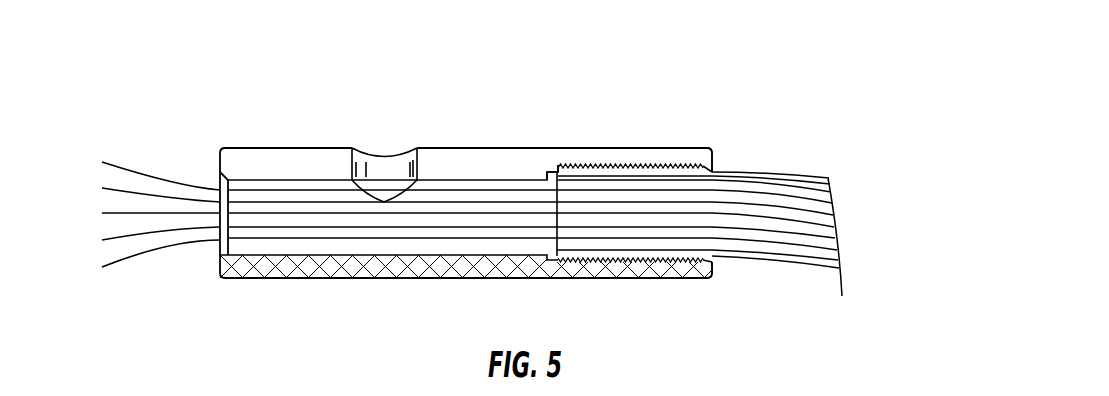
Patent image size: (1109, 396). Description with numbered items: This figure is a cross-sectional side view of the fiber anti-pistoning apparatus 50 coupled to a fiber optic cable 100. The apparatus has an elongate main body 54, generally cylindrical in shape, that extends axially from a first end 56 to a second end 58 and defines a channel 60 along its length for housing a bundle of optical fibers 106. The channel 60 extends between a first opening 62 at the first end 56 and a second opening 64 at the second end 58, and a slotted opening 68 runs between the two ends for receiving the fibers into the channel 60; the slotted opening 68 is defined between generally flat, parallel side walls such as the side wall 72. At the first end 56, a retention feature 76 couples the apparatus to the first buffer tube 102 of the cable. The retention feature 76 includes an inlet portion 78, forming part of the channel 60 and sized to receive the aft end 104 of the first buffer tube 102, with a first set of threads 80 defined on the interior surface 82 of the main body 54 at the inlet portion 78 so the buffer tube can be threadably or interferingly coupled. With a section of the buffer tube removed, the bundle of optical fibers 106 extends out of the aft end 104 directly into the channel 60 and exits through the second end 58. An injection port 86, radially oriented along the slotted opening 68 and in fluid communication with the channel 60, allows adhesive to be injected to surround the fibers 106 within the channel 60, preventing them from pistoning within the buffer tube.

The fiber anti-pistoning apparatus 50 is at (359, 96).
The elongate main body 54 is at (290, 277).
The first end 56 is at (713, 279).
The second end 58 is at (219, 277).
The channel 60 is at (458, 233).
The first opening 62 is at (718, 162).
The second opening 64 is at (193, 166).
The slotted opening 68 is at (283, 161).
The side wall 72 is at (453, 160).
The retention feature 76 is at (679, 147).
The inlet portion 78 is at (710, 288).
The first set of threads 80 is at (610, 165).
The interior surface 82 is at (341, 256).
The injection port 86 is at (383, 150).
The fiber optic cable 100 is at (800, 183).
The first buffer tube 102 is at (780, 268).
The aft end 104 is at (564, 165).
The bundle of optical fibers 106 is at (183, 215).